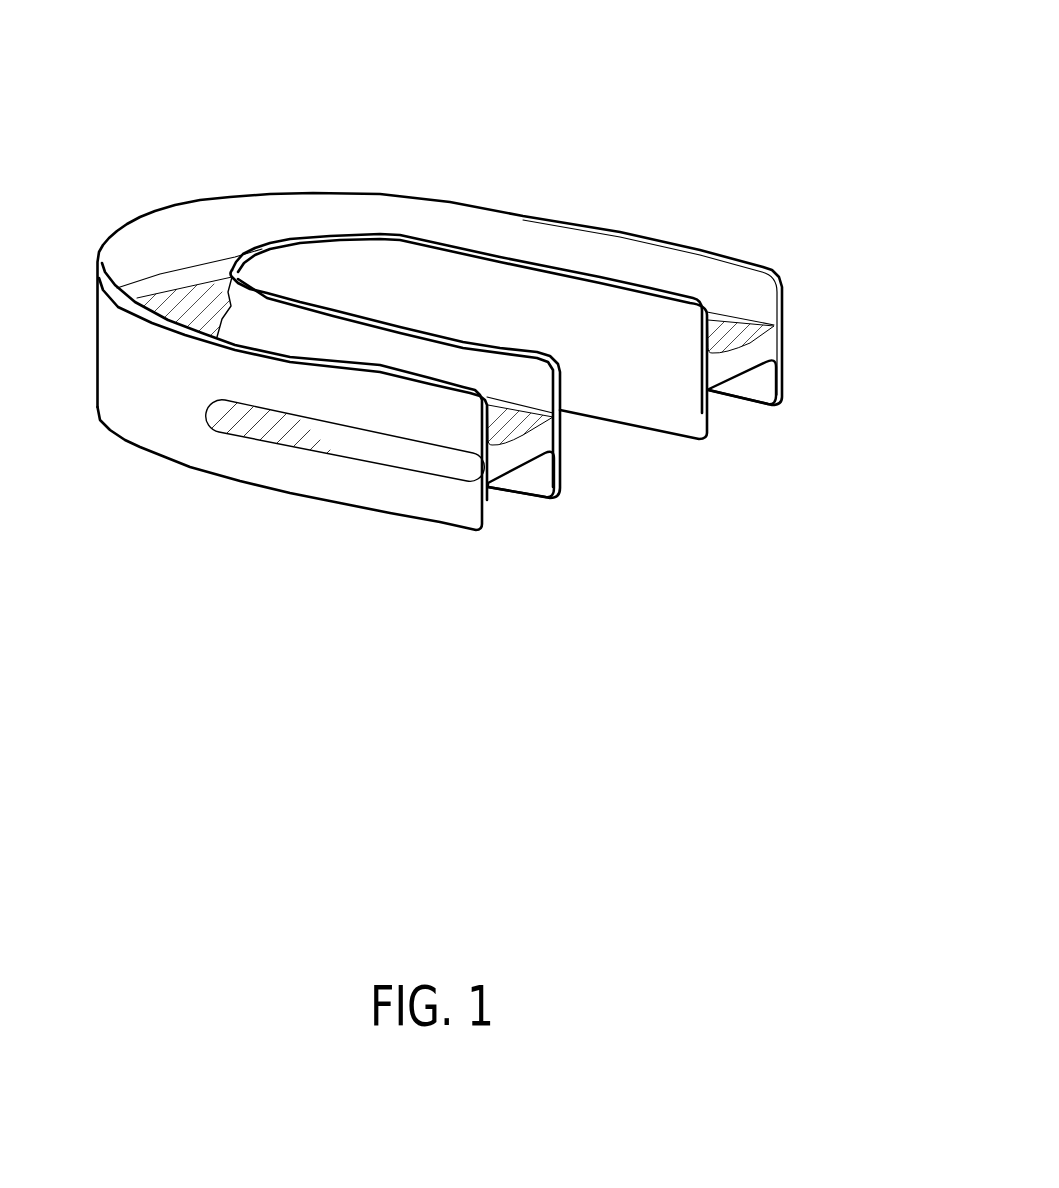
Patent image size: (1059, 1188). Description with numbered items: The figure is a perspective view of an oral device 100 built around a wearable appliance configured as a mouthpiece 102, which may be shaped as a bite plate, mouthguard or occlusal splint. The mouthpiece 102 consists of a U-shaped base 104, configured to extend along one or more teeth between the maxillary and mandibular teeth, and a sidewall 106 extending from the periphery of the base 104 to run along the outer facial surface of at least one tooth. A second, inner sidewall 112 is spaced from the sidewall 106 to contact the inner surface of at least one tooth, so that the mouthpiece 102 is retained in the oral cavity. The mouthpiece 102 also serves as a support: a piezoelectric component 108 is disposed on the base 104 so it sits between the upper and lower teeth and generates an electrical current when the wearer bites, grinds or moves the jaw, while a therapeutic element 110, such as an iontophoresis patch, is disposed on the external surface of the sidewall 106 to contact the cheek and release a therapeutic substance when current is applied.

The oral device 100 is at (649, 120).
The mouthpiece 102 is at (818, 313).
The base 104 is at (767, 327).
The sidewall 106 is at (673, 266).
The piezoelectric component 108 is at (187, 298).
The therapeutic element 110 is at (312, 435).
The inner sidewall 112 is at (473, 313).